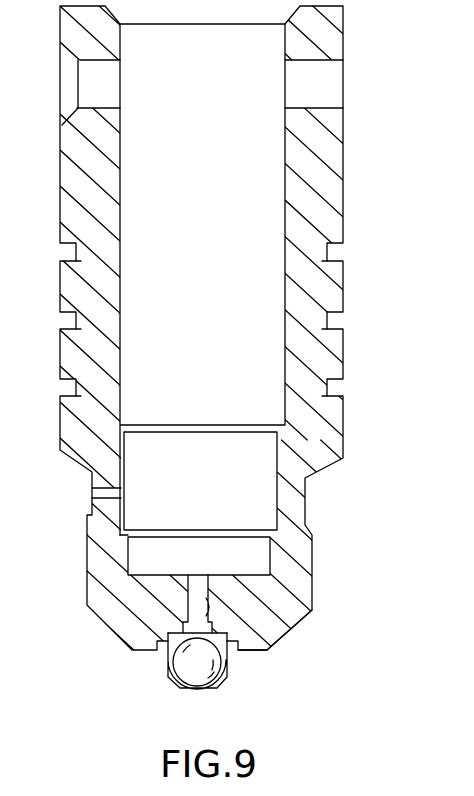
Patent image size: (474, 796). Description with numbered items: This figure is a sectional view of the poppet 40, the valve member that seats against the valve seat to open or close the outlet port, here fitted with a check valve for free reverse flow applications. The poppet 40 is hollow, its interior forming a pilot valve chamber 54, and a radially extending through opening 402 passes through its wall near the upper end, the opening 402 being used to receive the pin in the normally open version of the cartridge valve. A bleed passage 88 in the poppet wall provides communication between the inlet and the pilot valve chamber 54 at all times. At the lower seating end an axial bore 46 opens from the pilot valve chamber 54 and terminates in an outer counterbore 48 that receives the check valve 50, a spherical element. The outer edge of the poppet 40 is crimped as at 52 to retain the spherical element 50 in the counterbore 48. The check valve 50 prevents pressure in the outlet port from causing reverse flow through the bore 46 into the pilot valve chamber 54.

The poppet 40 is at (332, 424).
The radially extending through opening 402 is at (310, 63).
The pilot valve chamber 54 is at (258, 515).
The bleed passage 88 is at (93, 490).
The outer counterbore 48 is at (170, 650).
The crimped outer edge 52 is at (172, 685).
The check valve 50 is at (220, 687).
The axial bore 46 is at (267, 650).